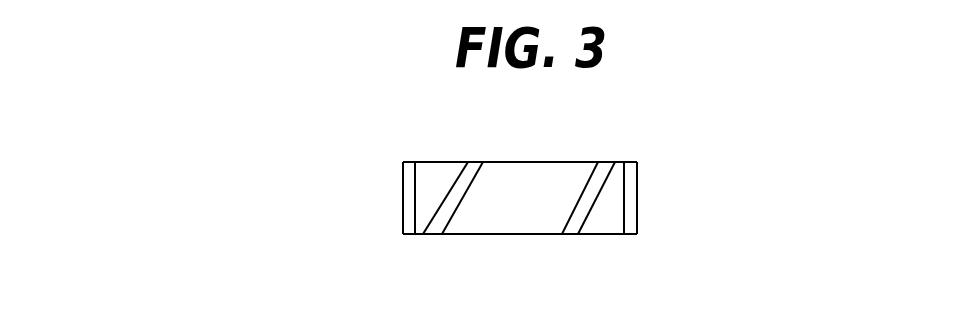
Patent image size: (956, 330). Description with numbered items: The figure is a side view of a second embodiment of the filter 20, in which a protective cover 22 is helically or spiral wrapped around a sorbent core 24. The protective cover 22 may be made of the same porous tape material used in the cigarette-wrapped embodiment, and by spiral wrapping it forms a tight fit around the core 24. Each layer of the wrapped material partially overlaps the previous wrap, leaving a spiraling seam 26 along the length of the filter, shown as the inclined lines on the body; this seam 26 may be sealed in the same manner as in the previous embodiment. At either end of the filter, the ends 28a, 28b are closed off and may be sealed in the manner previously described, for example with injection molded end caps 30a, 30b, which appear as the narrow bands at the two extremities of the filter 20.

The filter 20 is at (502, 152).
The protective cover 22 is at (543, 182).
The sorbent core 24 is at (505, 215).
The spiraling seam 26 is at (660, 189).
The end 28a is at (403, 182).
The end 28b is at (637, 204).
The injection molded end cap 30a is at (415, 212).
The injection molded end cap 30b is at (698, 215).